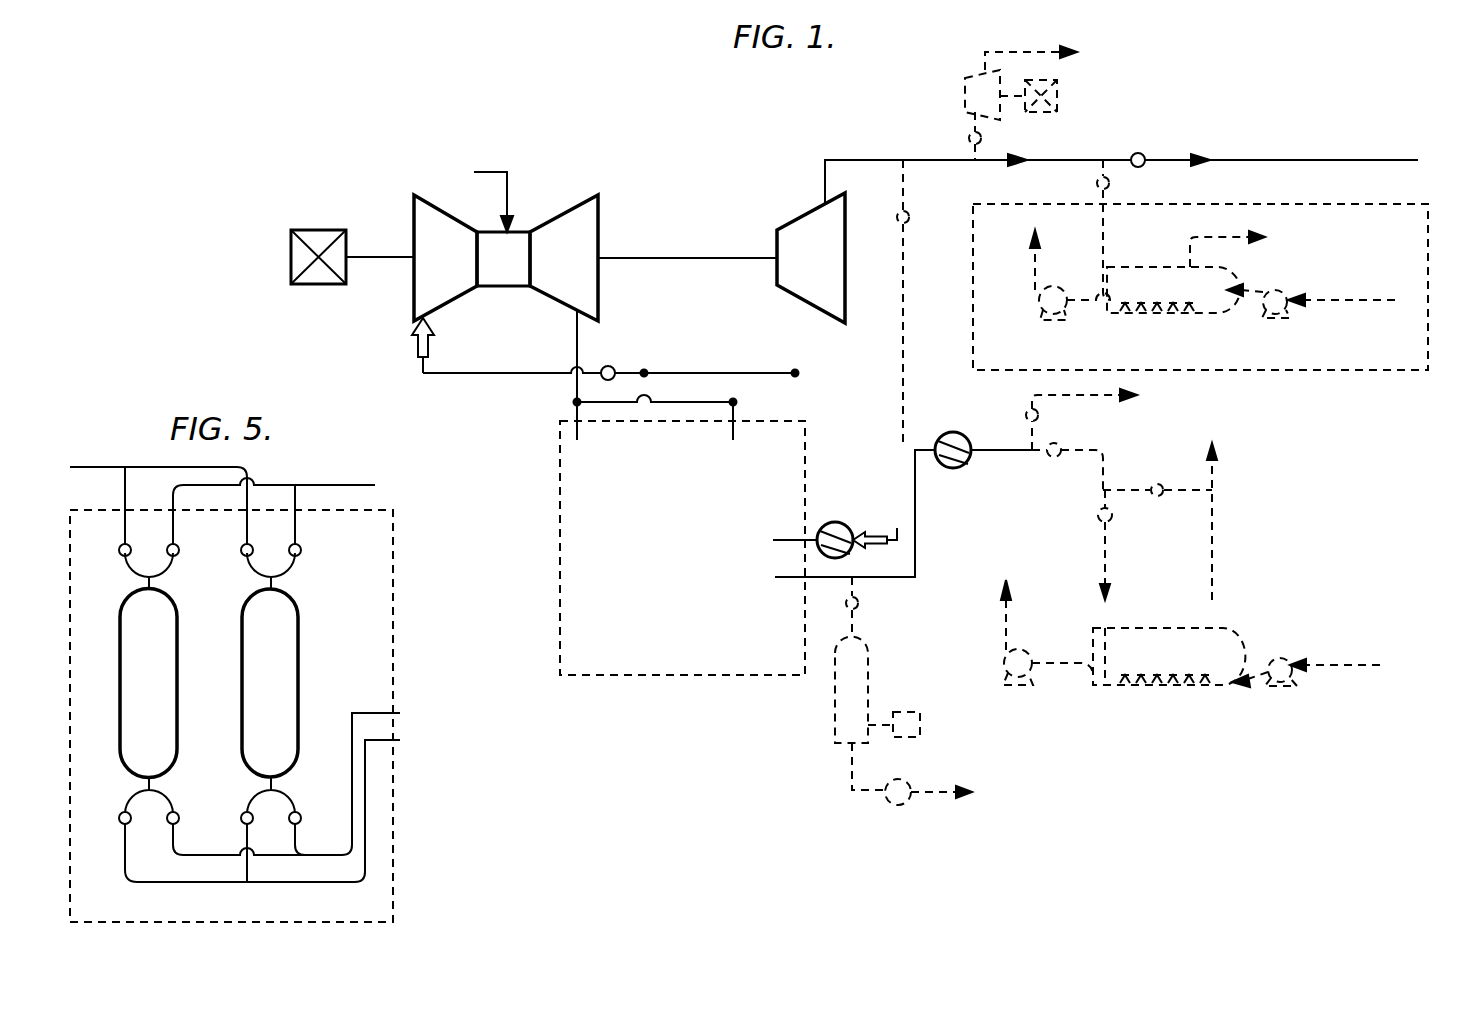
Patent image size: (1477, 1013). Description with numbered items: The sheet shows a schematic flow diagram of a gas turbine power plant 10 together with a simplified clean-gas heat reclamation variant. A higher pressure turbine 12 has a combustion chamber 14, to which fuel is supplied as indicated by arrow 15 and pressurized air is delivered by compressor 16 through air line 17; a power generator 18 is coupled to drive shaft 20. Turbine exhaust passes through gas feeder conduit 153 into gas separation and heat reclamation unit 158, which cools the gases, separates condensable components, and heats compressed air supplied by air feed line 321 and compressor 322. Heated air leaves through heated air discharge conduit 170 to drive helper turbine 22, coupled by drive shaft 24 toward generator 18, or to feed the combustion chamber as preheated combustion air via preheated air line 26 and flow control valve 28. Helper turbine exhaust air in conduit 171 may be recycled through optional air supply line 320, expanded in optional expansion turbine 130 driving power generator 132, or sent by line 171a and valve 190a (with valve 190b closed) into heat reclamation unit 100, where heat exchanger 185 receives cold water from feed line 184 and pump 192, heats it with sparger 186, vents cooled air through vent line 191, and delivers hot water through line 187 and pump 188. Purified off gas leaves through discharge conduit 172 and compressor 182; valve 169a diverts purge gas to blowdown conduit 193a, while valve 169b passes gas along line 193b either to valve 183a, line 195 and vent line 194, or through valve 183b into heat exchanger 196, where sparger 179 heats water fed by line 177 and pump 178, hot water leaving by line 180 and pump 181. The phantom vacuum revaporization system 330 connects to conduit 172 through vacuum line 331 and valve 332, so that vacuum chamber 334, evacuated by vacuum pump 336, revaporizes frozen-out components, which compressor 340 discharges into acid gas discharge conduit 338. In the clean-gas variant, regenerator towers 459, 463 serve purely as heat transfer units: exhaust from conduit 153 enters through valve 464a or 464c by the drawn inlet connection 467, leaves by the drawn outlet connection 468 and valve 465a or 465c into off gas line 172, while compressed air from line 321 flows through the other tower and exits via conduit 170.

In FIG. 1, the gas turbine power plant 10 is at (474, 231).
In FIG. 1, the primary turbine 12 is at (562, 304).
In FIG. 1, the combustion chamber 14 is at (514, 289).
In FIG. 1, the fuel supply arrow 15 is at (507, 172).
In FIG. 1, the compressor 16 is at (441, 304).
In FIG. 1, the air line 17 is at (423, 384).
In FIG. 1, the power generator 18 is at (312, 230).
In FIG. 1, the drive shaft 20 is at (359, 257).
In FIG. 1, the helper gas turbine 22 is at (803, 214).
In FIG. 1, the drive shaft 24 is at (700, 258).
In FIG. 1, the preheated air line 26 is at (531, 370).
In FIG. 1, the flow control valve 28 is at (616, 368).
In FIG. 1, the heat reclamation unit 100 is at (1430, 243).
In FIG. 1, the expansion turbine 130 is at (970, 76).
In FIG. 1, the power generator 132 is at (1060, 96).
In FIG. 1, the gas feeder conduit 153 is at (580, 342).
In FIG. 5, the gas feeder conduit 153 is at (113, 467).
In FIG. 1, the gas separation and heat reclamation unit 158 is at (560, 578).
In FIG. 5, the gas separation and heat reclamation unit 158 is at (398, 590).
In FIG. 1, the valve 169a is at (1025, 410).
In FIG. 1, the valve 169b is at (1059, 467).
In FIG. 5, the heated air discharge conduit 170 is at (274, 501).
In FIG. 1, the heated air discharge conduit 171 is at (955, 160).
In FIG. 1, the line 171a is at (1088, 162).
In FIG. 1, the purified gas discharge conduit 172 is at (982, 445).
In FIG. 5, the purified gas discharge conduit 172 is at (400, 748).
In FIG. 1, the cold water line 177 is at (1355, 665).
In FIG. 1, the pump 178 is at (1283, 655).
In FIG. 1, the coils or sparger 179 is at (1186, 670).
In FIG. 1, the heated water line 180 is at (1005, 637).
In FIG. 1, the pump 181 is at (1024, 650).
In FIG. 1, the compressor 182 is at (963, 470).
In FIG. 1, the valve 183a is at (1165, 484).
In FIG. 1, the valve 183b is at (1095, 520).
In FIG. 1, the cold water feed line 184 is at (1330, 300).
In FIG. 1, the heat exchanger 185 is at (1108, 267).
In FIG. 1, the heating coils or sparger 186 is at (1144, 302).
In FIG. 1, the heated water line 187 is at (1050, 285).
In FIG. 1, the pump 188 is at (1038, 310).
In FIG. 1, the valve 190a is at (1110, 186).
In FIG. 1, the valve 190b is at (1138, 153).
In FIG. 1, the vent line 191 is at (1214, 235).
In FIG. 1, the pump 192 is at (1281, 290).
In FIG. 1, the blowdown conduit 193a is at (1110, 400).
In FIG. 1, the gas path 193b is at (1075, 450).
In FIG. 1, the vent line 194 is at (1218, 480).
In FIG. 1, the line 195 is at (1205, 495).
In FIG. 1, the heat exchanger 196 is at (1169, 656).
In FIG. 1, the air supply line 320 is at (907, 292).
In FIG. 1, the air feed line 321 is at (813, 540).
In FIG. 5, the air feed line 321 is at (352, 714).
In FIG. 1, the compressor 322 is at (846, 526).
In FIG. 1, the vacuum revaporization system 330 is at (916, 748).
In FIG. 1, the vacuum line 331 is at (862, 602).
In FIG. 1, the valve 332 is at (862, 615).
In FIG. 1, the vacuum chamber 334 is at (872, 680).
In FIG. 1, the vacuum pump 336 is at (925, 715).
In FIG. 1, the acid gas discharge conduit 338 is at (930, 800).
In FIG. 1, the compressor 340 is at (906, 805).
In FIG. 5, the regenerator tower 459 is at (148, 683).
In FIG. 5, the regenerator tower 463 is at (270, 683).
In FIG. 5, the valve 464a is at (122, 556).
In FIG. 5, the valve 464c is at (178, 549).
In FIG. 5, the valve 465a is at (122, 826).
In FIG. 5, the valve 465c is at (176, 815).
In FIG. 5, the inlet header line 467 is at (268, 584).
In FIG. 5, the outlet header line 468 is at (268, 786).